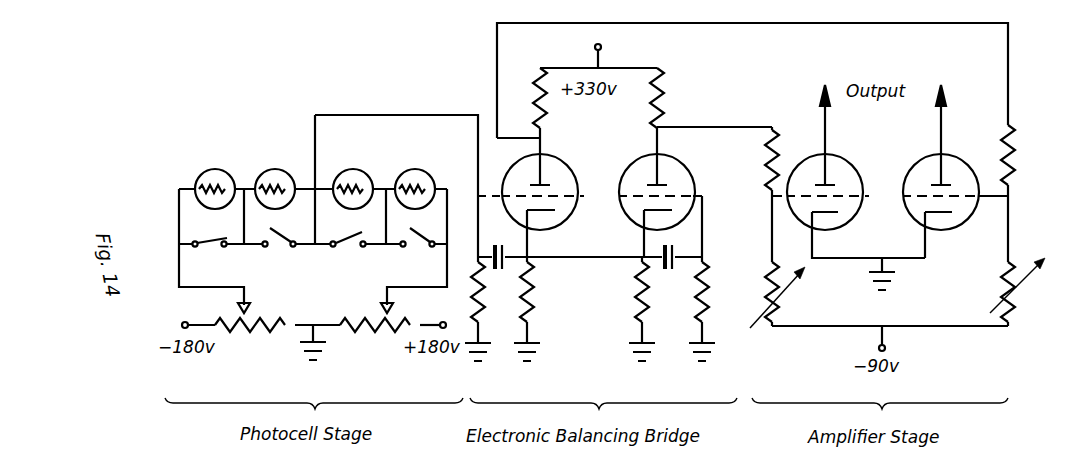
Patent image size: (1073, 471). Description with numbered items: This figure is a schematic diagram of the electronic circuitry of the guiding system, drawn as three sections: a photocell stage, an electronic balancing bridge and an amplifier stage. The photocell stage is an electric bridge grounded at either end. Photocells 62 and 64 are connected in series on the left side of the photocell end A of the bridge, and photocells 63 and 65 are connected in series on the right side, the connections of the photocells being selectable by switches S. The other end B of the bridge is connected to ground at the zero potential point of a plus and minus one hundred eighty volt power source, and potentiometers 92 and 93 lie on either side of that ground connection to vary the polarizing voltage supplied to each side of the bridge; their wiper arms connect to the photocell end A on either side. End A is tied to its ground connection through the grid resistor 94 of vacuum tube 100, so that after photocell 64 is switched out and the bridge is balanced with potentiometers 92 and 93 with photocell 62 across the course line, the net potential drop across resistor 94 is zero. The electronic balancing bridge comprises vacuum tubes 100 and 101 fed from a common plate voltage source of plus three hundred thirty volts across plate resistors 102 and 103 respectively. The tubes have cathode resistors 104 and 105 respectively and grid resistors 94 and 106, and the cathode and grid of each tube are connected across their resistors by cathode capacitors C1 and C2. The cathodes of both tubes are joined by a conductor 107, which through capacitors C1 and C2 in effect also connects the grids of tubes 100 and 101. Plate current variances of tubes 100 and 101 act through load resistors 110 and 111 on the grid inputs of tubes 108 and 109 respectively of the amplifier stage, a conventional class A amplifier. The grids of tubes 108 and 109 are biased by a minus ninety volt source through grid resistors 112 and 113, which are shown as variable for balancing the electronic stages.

The photocell 62 is at (268, 176).
The photocell 63 is at (350, 176).
The photocell 64 is at (207, 176).
The photocell 65 is at (413, 176).
The photocell end of the bridge A is at (311, 180).
The other end of the bridge B is at (303, 331).
The switches S is at (280, 240).
The potentiometer 92 is at (252, 330).
The potentiometer 93 is at (388, 331).
The grid resistor 94 is at (474, 283).
The vacuum tube 100 is at (558, 178).
The vacuum tube 101 is at (676, 183).
The plate resistor 102 is at (537, 80).
The plate resistor 103 is at (661, 80).
The cathode resistor 104 is at (530, 292).
The cathode resistor 105 is at (636, 281).
The grid resistor 106 is at (707, 290).
The conductor 107 is at (612, 257).
The cathode capacitor C1 is at (495, 244).
The cathode capacitor C2 is at (672, 253).
The amplifier tube 108 is at (840, 175).
The amplifier tube 109 is at (954, 175).
The load resistor 110 is at (776, 137).
The load resistor 111 is at (1014, 150).
The grid resistor 112 is at (770, 288).
The grid resistor 113 is at (1026, 277).